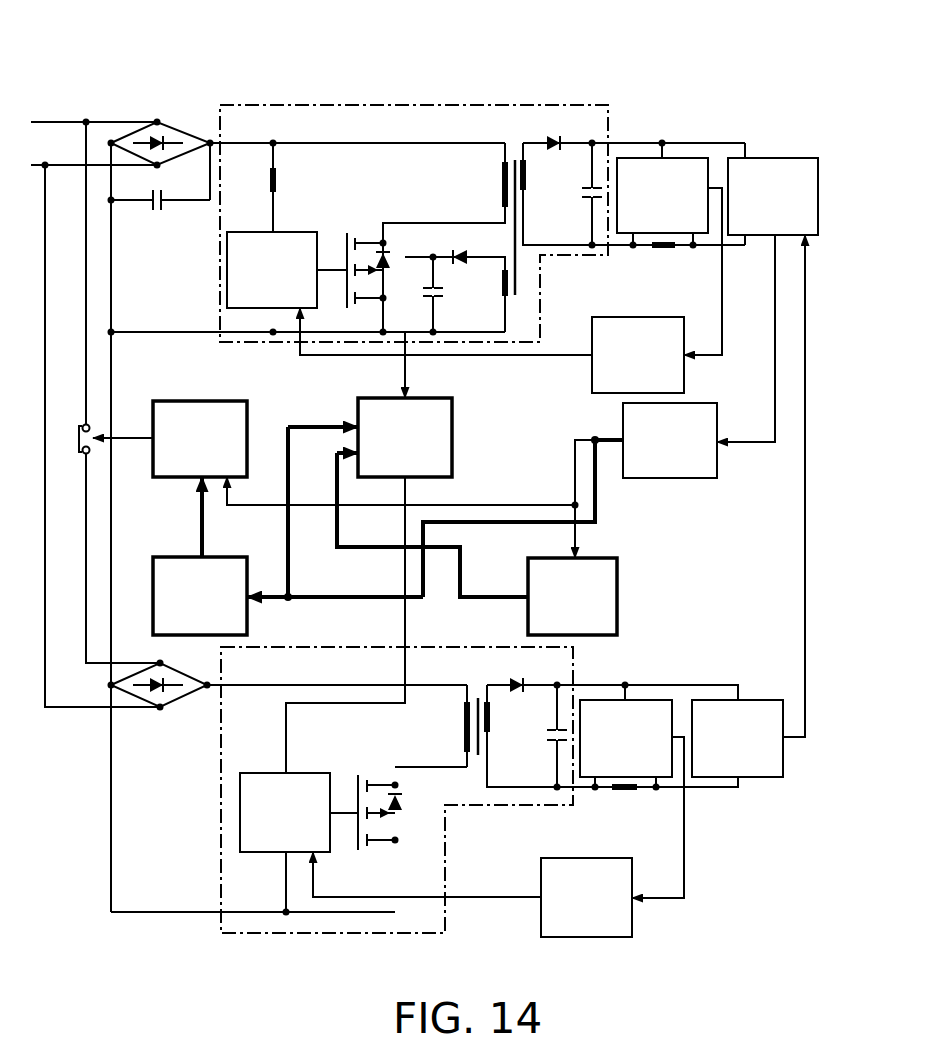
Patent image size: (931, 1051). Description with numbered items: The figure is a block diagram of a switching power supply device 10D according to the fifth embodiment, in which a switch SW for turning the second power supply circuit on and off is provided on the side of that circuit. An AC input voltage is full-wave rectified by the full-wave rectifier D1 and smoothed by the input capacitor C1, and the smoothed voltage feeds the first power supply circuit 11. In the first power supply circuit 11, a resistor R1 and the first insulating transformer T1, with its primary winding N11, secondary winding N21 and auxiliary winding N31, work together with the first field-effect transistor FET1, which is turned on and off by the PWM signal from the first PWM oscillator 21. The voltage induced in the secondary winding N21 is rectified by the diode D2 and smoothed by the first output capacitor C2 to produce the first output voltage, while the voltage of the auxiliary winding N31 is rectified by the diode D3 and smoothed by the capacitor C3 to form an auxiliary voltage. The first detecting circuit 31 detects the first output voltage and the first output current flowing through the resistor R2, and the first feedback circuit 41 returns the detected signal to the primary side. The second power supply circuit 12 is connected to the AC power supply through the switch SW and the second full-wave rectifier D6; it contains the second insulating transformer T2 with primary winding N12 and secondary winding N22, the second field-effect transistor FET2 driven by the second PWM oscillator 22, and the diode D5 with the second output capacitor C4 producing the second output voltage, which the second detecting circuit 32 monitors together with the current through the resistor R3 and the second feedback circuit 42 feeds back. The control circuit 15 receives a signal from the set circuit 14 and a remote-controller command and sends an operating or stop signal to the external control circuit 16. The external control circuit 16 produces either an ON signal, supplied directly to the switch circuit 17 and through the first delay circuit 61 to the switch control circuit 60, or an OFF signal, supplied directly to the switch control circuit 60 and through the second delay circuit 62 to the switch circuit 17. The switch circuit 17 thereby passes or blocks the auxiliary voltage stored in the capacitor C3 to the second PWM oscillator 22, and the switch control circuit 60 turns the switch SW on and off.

The switching power supply device 10D is at (650, 75).
The first power supply circuit 11 is at (425, 105).
The second power supply circuit 12 is at (258, 933).
The set circuit 14 is at (767, 700).
The control circuit 15 is at (800, 158).
The external control circuit 16 is at (717, 410).
The switch circuit 17 is at (358, 408).
The first PWM oscillator 21 is at (247, 232).
The second PWM oscillator 22 is at (248, 773).
The first detecting circuit 31 is at (690, 158).
The second detecting circuit 32 is at (655, 700).
The first feedback circuit 41 is at (606, 317).
The second feedback circuit 42 is at (556, 858).
The switch control circuit 60 is at (168, 401).
The first delay circuit 61 is at (168, 557).
The second delay circuit 62 is at (617, 575).
The full-wave rectifier D1 is at (160, 138).
The second full-wave rectifier D6 is at (159, 679).
The input capacitor C1 is at (160, 212).
The resistor R1 is at (256, 187).
The first field-effect transistor FET1 is at (353, 259).
The second field-effect transistor FET2 is at (366, 802).
The first insulating transformer T1 is at (506, 203).
The second insulating transformer T2 is at (471, 705).
The primary winding N11 is at (483, 184).
The secondary winding N21 is at (542, 178).
The tertiary winding (auxiliary winding) N31 is at (485, 283).
The primary winding N12 is at (445, 727).
The secondary winding N22 is at (506, 719).
The diode D2 is at (557, 131).
The diode D3 is at (457, 248).
The diode D5 is at (520, 674).
The first output capacitor C2 is at (580, 206).
The capacitor C3 is at (444, 306).
The second output capacitor C4 is at (544, 750).
The resistor R2 is at (661, 258).
The resistor R3 is at (624, 800).
The switch SW is at (69, 435).